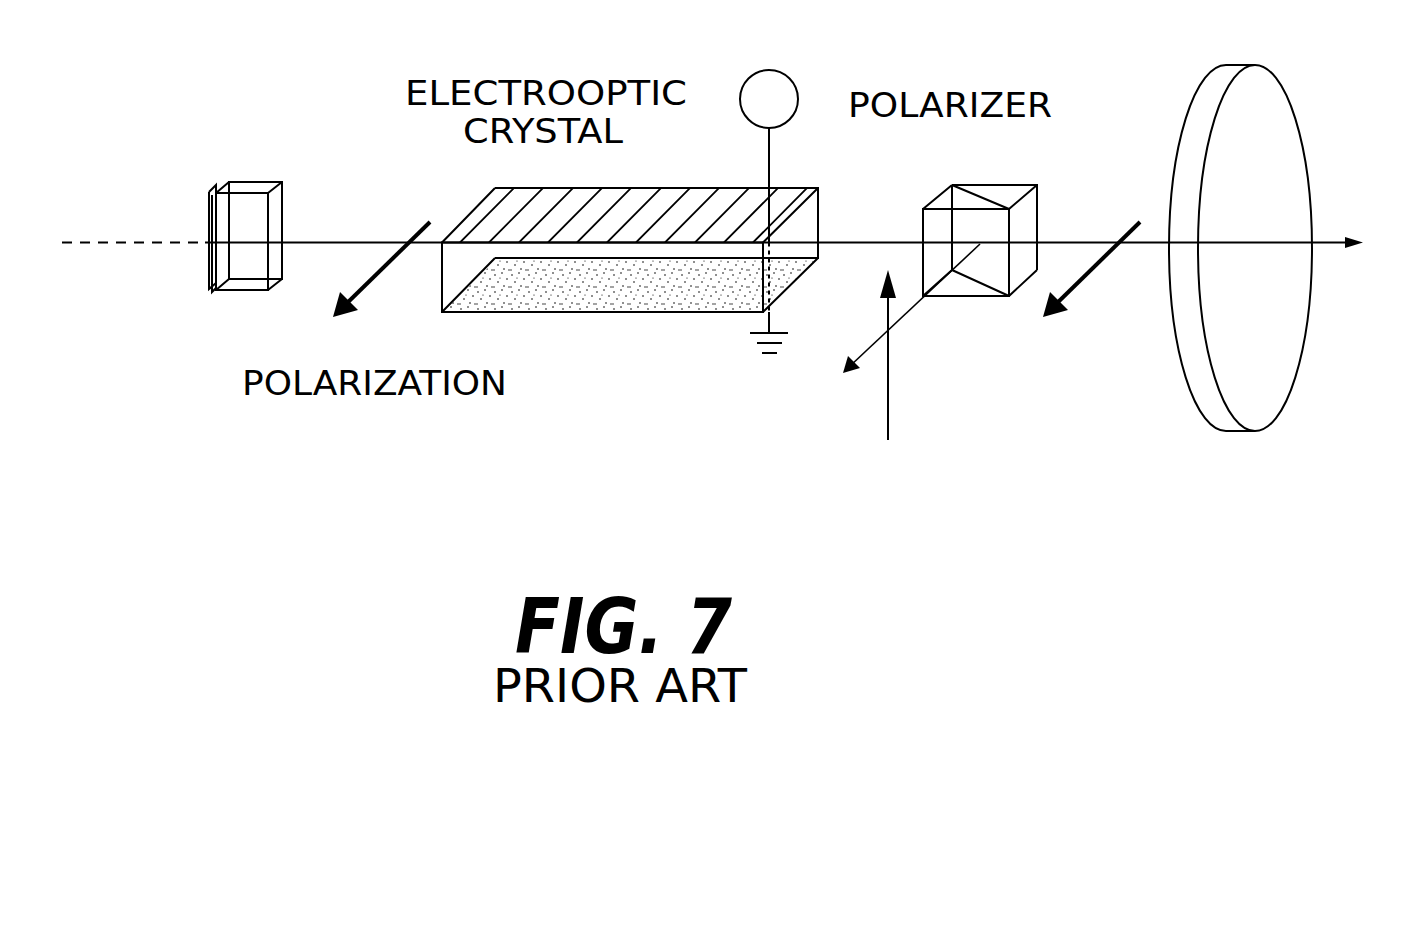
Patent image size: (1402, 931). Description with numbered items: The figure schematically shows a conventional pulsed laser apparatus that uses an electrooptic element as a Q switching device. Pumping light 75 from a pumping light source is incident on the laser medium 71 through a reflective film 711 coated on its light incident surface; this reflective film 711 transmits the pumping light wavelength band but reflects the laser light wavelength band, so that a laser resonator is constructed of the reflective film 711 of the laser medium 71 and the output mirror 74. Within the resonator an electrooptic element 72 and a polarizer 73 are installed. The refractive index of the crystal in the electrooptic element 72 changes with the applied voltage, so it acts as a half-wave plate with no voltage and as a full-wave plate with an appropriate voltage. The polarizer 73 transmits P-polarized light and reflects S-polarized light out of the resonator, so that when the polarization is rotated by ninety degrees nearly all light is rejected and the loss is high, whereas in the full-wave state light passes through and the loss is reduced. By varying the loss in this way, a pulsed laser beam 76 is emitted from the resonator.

The laser medium 71 is at (263, 187).
The reflective film 711 is at (222, 183).
The electrooptic element 72 is at (813, 230).
The polarizer 73 is at (1008, 183).
The output mirror 74 is at (1217, 345).
The pumping light 75 is at (128, 240).
The pulsed laser beam 76 is at (1287, 243).